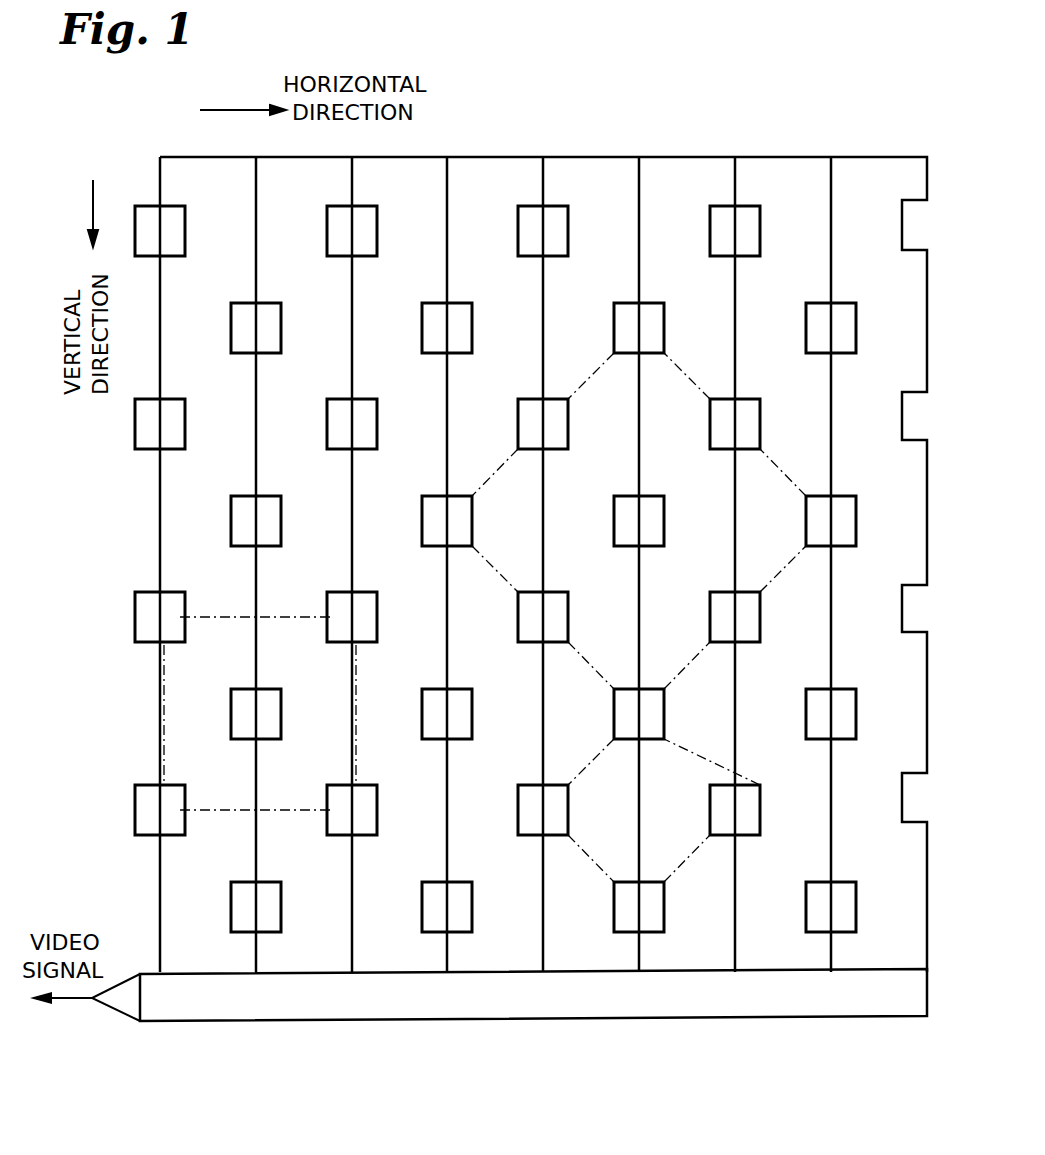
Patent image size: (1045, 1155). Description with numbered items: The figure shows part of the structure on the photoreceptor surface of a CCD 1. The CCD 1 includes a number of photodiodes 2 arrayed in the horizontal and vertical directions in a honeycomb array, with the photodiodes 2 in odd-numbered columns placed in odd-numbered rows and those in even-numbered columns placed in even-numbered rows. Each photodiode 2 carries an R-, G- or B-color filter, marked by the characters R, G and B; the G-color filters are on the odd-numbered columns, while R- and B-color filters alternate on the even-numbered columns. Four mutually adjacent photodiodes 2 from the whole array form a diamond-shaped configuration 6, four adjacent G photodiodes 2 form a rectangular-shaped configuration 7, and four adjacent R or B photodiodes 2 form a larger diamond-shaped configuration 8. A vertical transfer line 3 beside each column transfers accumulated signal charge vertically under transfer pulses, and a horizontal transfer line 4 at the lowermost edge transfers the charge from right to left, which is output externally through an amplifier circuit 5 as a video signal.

The CCD 1 is at (613, 112).
The photodiode 2 is at (187, 240).
The vertical transfer line 3 is at (203, 178).
The horizontal transfer line 4 is at (620, 998).
The amplifier circuit 5 is at (128, 1008).
The diamond-shaped configuration 6 is at (575, 840).
The rectangular-shaped configuration 7 is at (205, 617).
The diamond-shaped configuration 8 is at (480, 550).